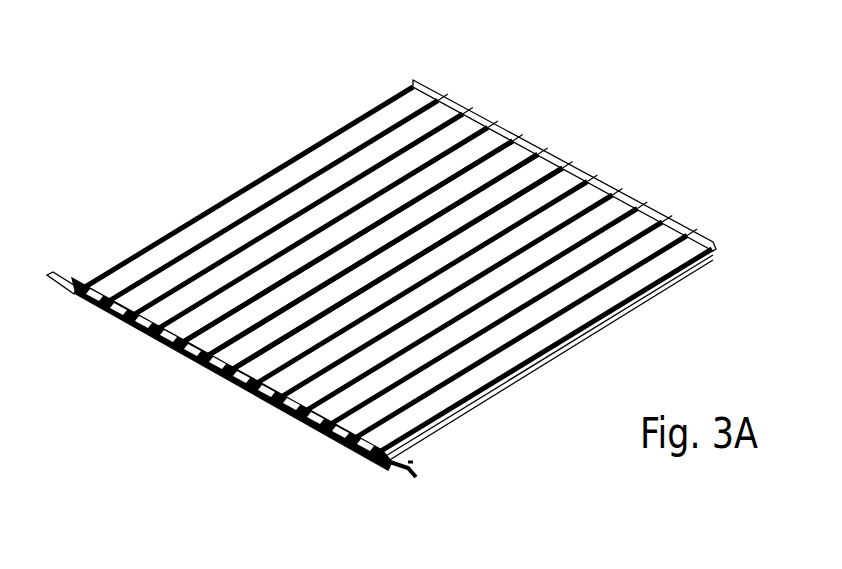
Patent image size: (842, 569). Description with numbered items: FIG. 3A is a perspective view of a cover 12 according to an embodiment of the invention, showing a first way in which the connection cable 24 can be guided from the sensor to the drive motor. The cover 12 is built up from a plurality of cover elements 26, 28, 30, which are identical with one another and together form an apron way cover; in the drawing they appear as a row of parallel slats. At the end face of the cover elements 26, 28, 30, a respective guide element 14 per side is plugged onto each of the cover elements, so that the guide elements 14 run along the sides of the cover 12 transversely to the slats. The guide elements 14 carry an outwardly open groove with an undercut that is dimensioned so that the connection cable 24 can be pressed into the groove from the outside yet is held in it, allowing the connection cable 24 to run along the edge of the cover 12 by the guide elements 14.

The cover 12 is at (381, 274).
The guide element 14 is at (208, 372).
The connection cable 24 is at (374, 459).
The cover element 26 is at (536, 168).
The cover element 28 is at (562, 180).
The cover element 30 is at (590, 195).